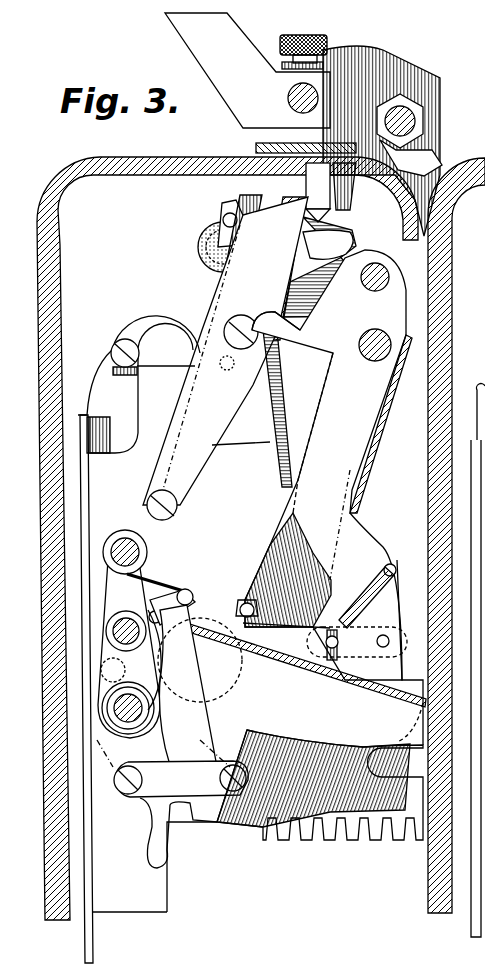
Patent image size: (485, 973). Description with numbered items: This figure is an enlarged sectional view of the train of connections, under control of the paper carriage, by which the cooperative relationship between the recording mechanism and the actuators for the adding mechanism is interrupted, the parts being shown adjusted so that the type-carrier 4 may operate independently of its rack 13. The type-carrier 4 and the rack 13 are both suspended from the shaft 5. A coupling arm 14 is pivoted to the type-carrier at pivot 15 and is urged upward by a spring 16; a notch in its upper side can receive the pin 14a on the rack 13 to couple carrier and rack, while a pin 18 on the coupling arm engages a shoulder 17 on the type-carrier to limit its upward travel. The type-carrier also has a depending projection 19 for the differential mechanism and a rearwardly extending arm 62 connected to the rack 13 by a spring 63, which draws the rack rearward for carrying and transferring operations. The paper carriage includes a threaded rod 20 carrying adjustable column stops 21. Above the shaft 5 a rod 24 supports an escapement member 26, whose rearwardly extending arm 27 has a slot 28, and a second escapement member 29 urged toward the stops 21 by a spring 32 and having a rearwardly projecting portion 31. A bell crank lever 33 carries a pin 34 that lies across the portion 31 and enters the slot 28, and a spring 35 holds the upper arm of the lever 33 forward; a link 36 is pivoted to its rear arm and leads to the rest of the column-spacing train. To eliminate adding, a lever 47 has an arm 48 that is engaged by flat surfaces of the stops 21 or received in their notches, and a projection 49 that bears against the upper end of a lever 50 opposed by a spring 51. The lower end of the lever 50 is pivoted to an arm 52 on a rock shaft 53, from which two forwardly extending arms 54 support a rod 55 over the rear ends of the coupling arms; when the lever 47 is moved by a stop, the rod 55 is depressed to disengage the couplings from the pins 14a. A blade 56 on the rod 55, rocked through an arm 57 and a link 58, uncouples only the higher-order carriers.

The type-carrier 4 is at (328, 465).
The shaft 5 is at (368, 357).
The rack 13 is at (323, 830).
The coupling arm 14 is at (213, 623).
The pin 14a is at (247, 603).
The pivot 15 is at (383, 649).
The spring 16 is at (376, 578).
The shoulder 17 is at (333, 628).
The pin 18 is at (329, 662).
The depending projection 19 is at (188, 815).
The threaded rod 20 is at (416, 128).
The stop 21 is at (416, 97).
The rod 24 is at (399, 302).
The escapement member 26 is at (350, 190).
The rearwardly extending arm 27 is at (213, 230).
The slot 28 is at (213, 255).
The escapement member 29 is at (432, 184).
The rearwardly projecting portion 31 is at (217, 213).
The spring 32 is at (244, 208).
The bell crank lever 33 is at (143, 310).
The pin 34 is at (266, 270).
The spring 35 is at (313, 300).
The link 36 is at (88, 503).
The lever 47 is at (262, 157).
The arm 48 is at (366, 100).
The projection 49 is at (308, 178).
The lever 50 is at (225, 351).
The spring 51 is at (352, 235).
The arm 52 is at (170, 528).
The rock shaft 53 is at (117, 543).
The forwardly extending arm 54 is at (167, 563).
The rod 55 is at (190, 594).
The blade 56 is at (198, 585).
The arm 57 is at (140, 594).
The link 58 is at (270, 654).
The rearwardly extending arm 62 is at (297, 316).
The spring 63 is at (283, 398).